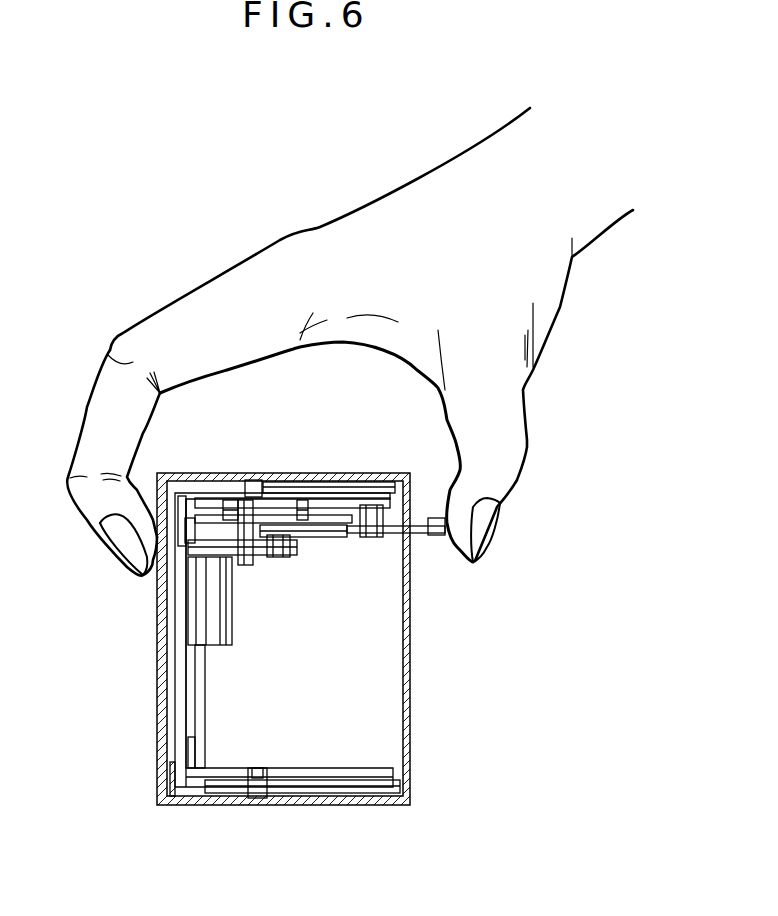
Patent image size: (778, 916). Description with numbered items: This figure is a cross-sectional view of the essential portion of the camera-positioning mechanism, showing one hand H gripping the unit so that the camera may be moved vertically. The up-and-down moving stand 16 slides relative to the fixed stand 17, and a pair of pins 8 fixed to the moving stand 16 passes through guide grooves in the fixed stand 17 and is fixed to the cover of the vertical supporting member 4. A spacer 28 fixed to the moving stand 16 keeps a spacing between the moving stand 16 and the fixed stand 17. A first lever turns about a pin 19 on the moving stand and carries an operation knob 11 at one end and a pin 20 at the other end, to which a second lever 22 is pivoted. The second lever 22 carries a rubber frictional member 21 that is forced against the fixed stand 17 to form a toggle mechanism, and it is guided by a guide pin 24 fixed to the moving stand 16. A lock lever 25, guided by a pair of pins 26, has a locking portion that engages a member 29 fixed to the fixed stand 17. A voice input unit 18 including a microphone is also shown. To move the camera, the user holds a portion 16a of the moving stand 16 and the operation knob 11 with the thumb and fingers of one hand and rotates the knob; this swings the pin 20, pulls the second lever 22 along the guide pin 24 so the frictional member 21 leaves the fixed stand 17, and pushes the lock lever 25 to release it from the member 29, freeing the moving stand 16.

The vertical supporting member 4 is at (410, 805).
The pins 8 is at (253, 480).
The operation knob 11 is at (437, 517).
The up-and-down moving stand 16 is at (207, 773).
The portion of moving stand 16a is at (160, 717).
The fixed stand 17 is at (322, 788).
The voice input unit 18 is at (413, 537).
The pin 19 is at (375, 537).
The pin 20 is at (278, 547).
The frictional member 21 is at (195, 613).
The second lever 22 is at (300, 545).
The guide pin 24 is at (253, 565).
The lock lever 25 is at (347, 537).
The pins 26 is at (228, 507).
The spacer 28 is at (192, 750).
The member 29 is at (186, 497).